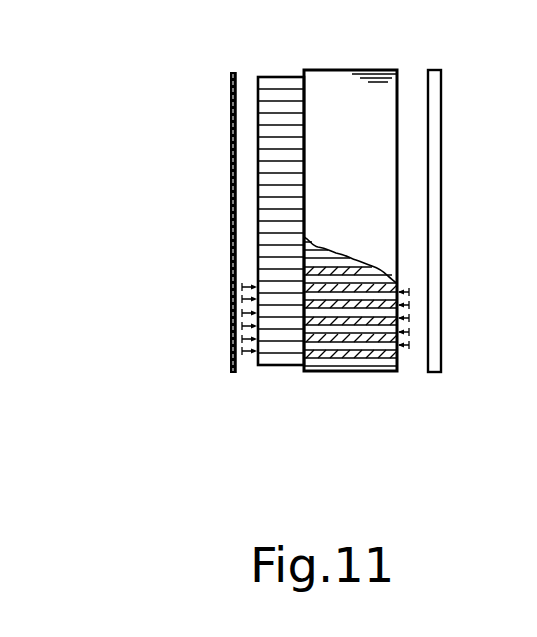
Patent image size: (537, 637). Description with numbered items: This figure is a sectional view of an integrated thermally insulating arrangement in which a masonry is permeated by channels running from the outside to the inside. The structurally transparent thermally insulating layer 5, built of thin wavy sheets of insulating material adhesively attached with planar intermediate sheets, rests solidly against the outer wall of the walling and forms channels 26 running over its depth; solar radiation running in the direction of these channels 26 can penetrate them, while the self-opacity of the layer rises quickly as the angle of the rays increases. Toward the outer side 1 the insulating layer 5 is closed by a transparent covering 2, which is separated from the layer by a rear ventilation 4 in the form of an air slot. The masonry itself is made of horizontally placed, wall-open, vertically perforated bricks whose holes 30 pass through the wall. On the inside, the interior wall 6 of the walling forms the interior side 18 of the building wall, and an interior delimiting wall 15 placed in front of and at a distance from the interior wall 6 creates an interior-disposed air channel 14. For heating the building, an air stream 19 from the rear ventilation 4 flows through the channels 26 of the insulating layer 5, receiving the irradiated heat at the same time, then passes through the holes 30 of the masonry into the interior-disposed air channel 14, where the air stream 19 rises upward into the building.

The outer side 1 is at (225, 266).
The transparent covering 2 is at (232, 92).
The rear ventilation 4 is at (243, 133).
The structurally transparent thermally insulating layer 5 is at (279, 188).
The interior wall 6 is at (397, 158).
The interior-disposed air channel 14 is at (410, 76).
The interior delimiting wall 15 is at (433, 130).
The interior side 18 is at (447, 231).
The air stream 19 is at (242, 355).
The channels 26 is at (263, 325).
The holes 30 is at (338, 315).